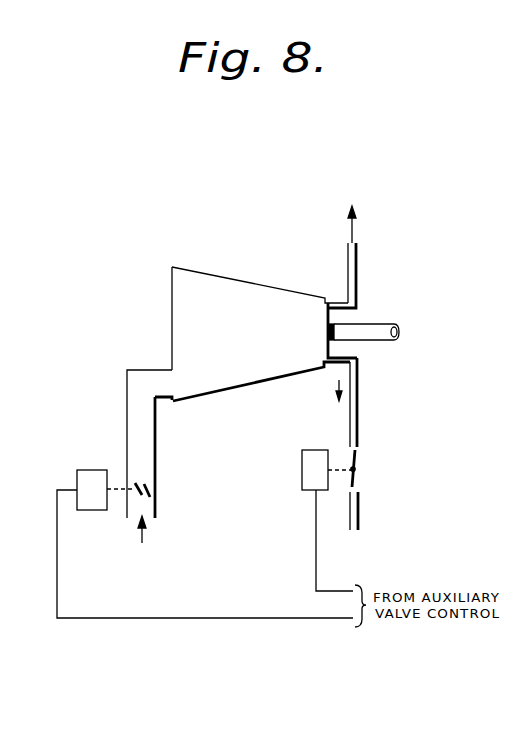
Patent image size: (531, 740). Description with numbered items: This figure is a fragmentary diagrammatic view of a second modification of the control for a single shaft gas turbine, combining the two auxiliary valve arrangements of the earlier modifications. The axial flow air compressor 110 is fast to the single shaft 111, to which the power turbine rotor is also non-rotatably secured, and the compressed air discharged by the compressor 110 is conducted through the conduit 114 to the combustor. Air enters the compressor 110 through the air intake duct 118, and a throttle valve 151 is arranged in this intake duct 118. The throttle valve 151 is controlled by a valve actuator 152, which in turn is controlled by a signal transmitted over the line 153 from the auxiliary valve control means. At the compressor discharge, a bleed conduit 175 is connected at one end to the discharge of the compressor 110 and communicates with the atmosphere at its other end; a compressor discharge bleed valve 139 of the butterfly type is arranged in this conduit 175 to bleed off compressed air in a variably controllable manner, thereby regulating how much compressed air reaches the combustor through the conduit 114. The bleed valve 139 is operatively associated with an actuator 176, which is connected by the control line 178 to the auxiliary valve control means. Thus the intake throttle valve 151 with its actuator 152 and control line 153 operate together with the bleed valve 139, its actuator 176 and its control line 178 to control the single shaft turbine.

The axial flow air compressor 110 is at (245, 258).
The conduit or duct 114 is at (356, 265).
The shaft 111 is at (376, 341).
The air inlet or intake duct 118 is at (127, 382).
The throttle valve 151 is at (137, 476).
The valve actuator 152 is at (77, 476).
The line 153 is at (57, 593).
The bleed duct 175 is at (358, 408).
The bleed valve 139 is at (355, 478).
The bleed valve actuator 176 is at (302, 472).
The control line from auxiliary valve control to bleed valve actuator 178 is at (317, 562).